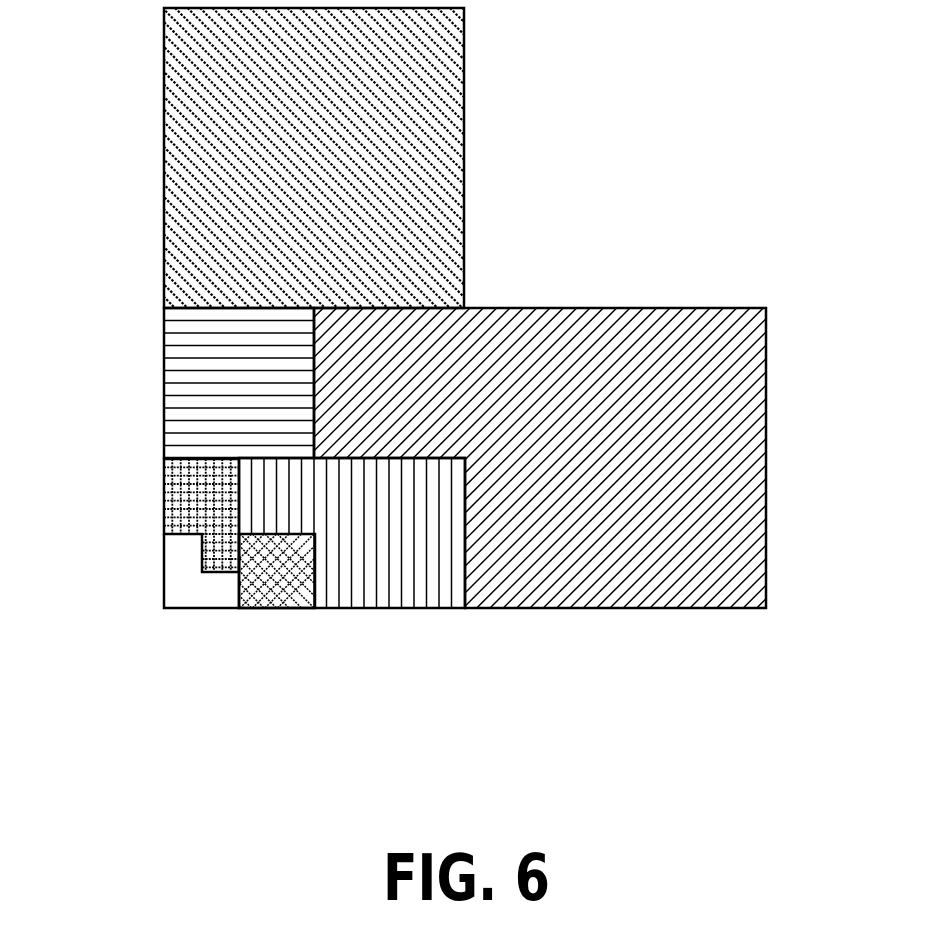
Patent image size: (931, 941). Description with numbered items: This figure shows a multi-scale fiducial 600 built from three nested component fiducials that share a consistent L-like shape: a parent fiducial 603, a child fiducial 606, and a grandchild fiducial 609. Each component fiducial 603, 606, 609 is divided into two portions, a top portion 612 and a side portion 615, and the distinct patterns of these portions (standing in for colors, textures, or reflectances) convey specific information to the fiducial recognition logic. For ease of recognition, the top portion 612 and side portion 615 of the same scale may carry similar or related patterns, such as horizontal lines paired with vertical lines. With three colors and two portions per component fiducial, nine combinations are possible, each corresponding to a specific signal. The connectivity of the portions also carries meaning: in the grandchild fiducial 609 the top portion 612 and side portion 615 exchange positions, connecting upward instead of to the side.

The multi-scale fiducial 600 is at (465, 364).
The parent fiducial 603 is at (672, 648).
The child fiducial 606 is at (408, 648).
The grandchild fiducial 609 is at (277, 648).
The top portion 612 is at (427, 158).
The side portion 615 is at (552, 336).